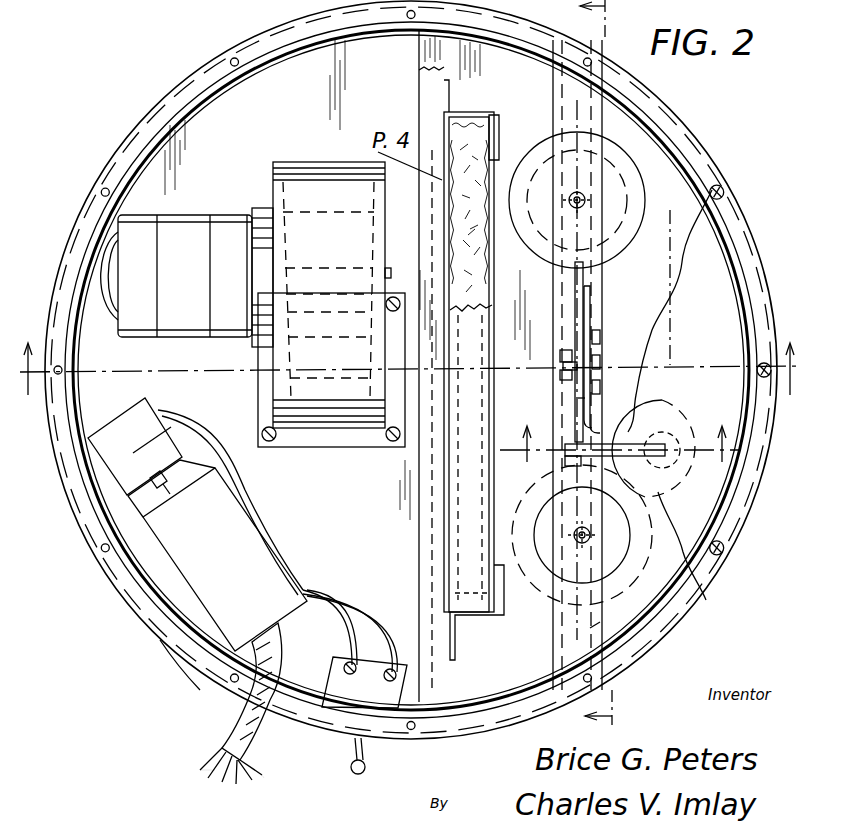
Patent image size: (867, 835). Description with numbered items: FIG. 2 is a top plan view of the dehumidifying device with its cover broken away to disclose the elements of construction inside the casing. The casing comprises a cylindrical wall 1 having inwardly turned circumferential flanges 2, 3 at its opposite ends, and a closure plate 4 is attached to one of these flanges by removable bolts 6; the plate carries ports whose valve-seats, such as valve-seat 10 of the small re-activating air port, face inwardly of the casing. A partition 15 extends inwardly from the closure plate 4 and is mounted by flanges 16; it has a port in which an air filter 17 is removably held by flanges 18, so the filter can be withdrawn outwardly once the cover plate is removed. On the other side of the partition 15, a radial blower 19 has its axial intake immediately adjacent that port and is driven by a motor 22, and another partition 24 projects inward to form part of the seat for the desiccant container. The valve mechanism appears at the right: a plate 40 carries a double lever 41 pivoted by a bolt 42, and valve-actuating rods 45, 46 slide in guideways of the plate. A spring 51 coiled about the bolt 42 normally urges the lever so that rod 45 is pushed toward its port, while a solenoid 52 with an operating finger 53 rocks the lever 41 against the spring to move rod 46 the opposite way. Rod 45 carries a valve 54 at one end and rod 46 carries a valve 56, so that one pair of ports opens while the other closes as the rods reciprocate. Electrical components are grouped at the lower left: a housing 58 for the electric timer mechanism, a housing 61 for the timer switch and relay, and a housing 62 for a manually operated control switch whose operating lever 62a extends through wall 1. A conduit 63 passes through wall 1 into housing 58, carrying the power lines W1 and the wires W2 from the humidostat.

The cylindrical wall 1 is at (172, 648).
The circumferential flange 2 is at (684, 143).
The circumferential flange 3 is at (410, 376).
The closure plate 4 is at (716, 248).
The bolts 6 is at (724, 190).
The valve-seat 10 is at (628, 448).
The partition 15 is at (447, 84).
The flanges 16 is at (422, 44).
The air filter 17 is at (480, 272).
The flanges 18 is at (500, 136).
The radial blower 19 is at (304, 178).
The motor 22 is at (183, 232).
The partition 24 is at (590, 630).
The plate 40 is at (586, 296).
The double lever 41 is at (578, 398).
The bolt 42 is at (562, 372).
The valve-actuating rod 45 is at (586, 200).
The valve-actuating rod 46 is at (586, 540).
The spring 51 is at (590, 330).
The solenoid 52 is at (640, 428).
The operating finger 53 is at (568, 458).
The valve 54 is at (620, 160).
The valve 56 is at (620, 552).
The housing 58 is at (262, 570).
The housing 61 is at (136, 418).
The housing 62 is at (396, 664).
The operating lever 62a is at (365, 768).
The conduit 63 is at (268, 738).
The power lines W1 is at (222, 778).
The wires W2 is at (290, 798).